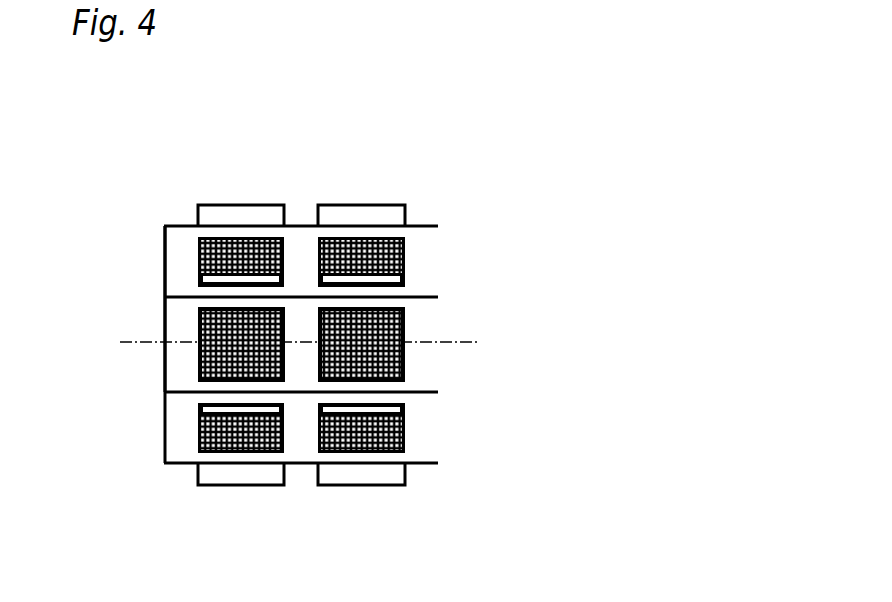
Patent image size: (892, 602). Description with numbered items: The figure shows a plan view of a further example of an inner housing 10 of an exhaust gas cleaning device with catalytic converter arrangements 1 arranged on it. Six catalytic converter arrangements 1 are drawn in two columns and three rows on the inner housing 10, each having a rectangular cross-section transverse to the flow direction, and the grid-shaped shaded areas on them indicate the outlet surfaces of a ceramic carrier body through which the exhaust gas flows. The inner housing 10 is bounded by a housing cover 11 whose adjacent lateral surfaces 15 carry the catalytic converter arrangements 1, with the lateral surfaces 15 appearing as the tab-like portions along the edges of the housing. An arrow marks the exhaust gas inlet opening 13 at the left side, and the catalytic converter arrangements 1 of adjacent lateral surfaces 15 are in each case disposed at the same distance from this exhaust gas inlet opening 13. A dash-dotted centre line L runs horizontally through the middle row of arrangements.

The catalytic converter arrangement 1 is at (226, 186).
The inner housing 10 is at (147, 476).
The housing cover 11 is at (165, 255).
The exhaust gas inlet opening 13 is at (135, 324).
The lateral surface 15 is at (182, 244).
The axis L is at (315, 342).